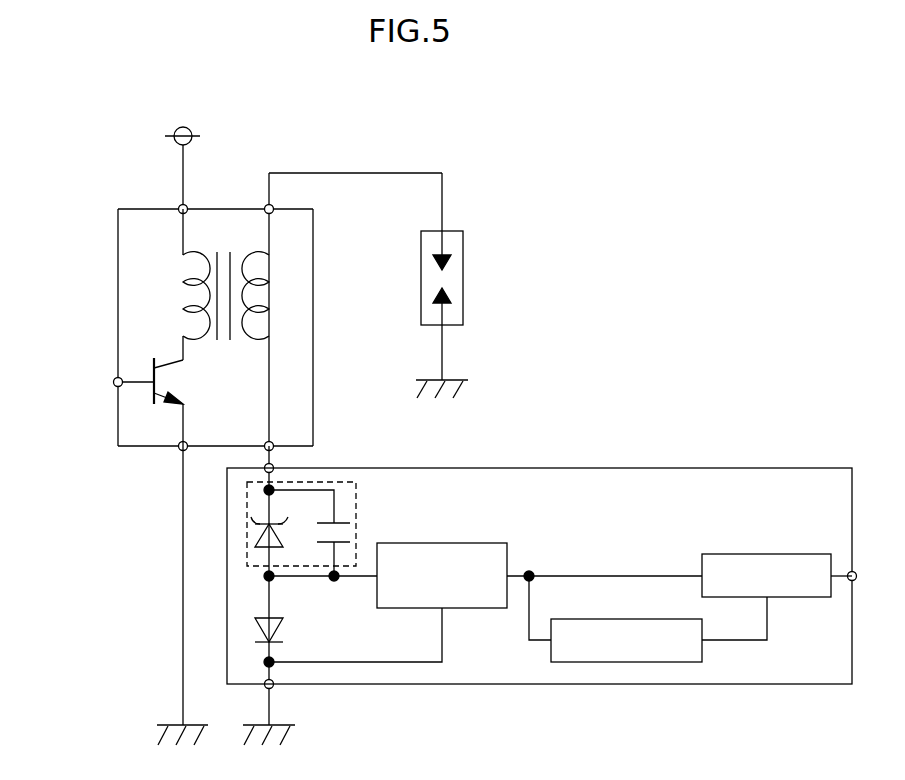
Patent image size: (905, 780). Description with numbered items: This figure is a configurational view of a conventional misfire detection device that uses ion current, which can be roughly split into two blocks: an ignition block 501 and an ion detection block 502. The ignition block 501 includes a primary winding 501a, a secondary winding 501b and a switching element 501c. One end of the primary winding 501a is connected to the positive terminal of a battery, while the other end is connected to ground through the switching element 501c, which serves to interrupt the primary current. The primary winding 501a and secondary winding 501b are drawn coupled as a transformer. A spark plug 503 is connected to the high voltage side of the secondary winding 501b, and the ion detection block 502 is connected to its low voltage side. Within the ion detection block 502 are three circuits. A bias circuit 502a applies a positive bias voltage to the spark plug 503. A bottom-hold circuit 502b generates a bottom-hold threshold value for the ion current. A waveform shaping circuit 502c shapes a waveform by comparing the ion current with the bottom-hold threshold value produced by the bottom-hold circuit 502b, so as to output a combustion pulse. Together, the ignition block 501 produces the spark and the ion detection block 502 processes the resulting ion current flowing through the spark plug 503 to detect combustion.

The ignition block 501 is at (140, 447).
The primary winding 501a is at (183, 297).
The secondary winding 501b is at (268, 297).
The switching element 501c is at (158, 357).
The ion detection block 502 is at (542, 468).
The bias circuit 502a is at (357, 523).
The bottom-hold circuit 502b is at (626, 663).
The waveform shaping circuit 502c is at (765, 554).
The spark plug 503 is at (463, 277).